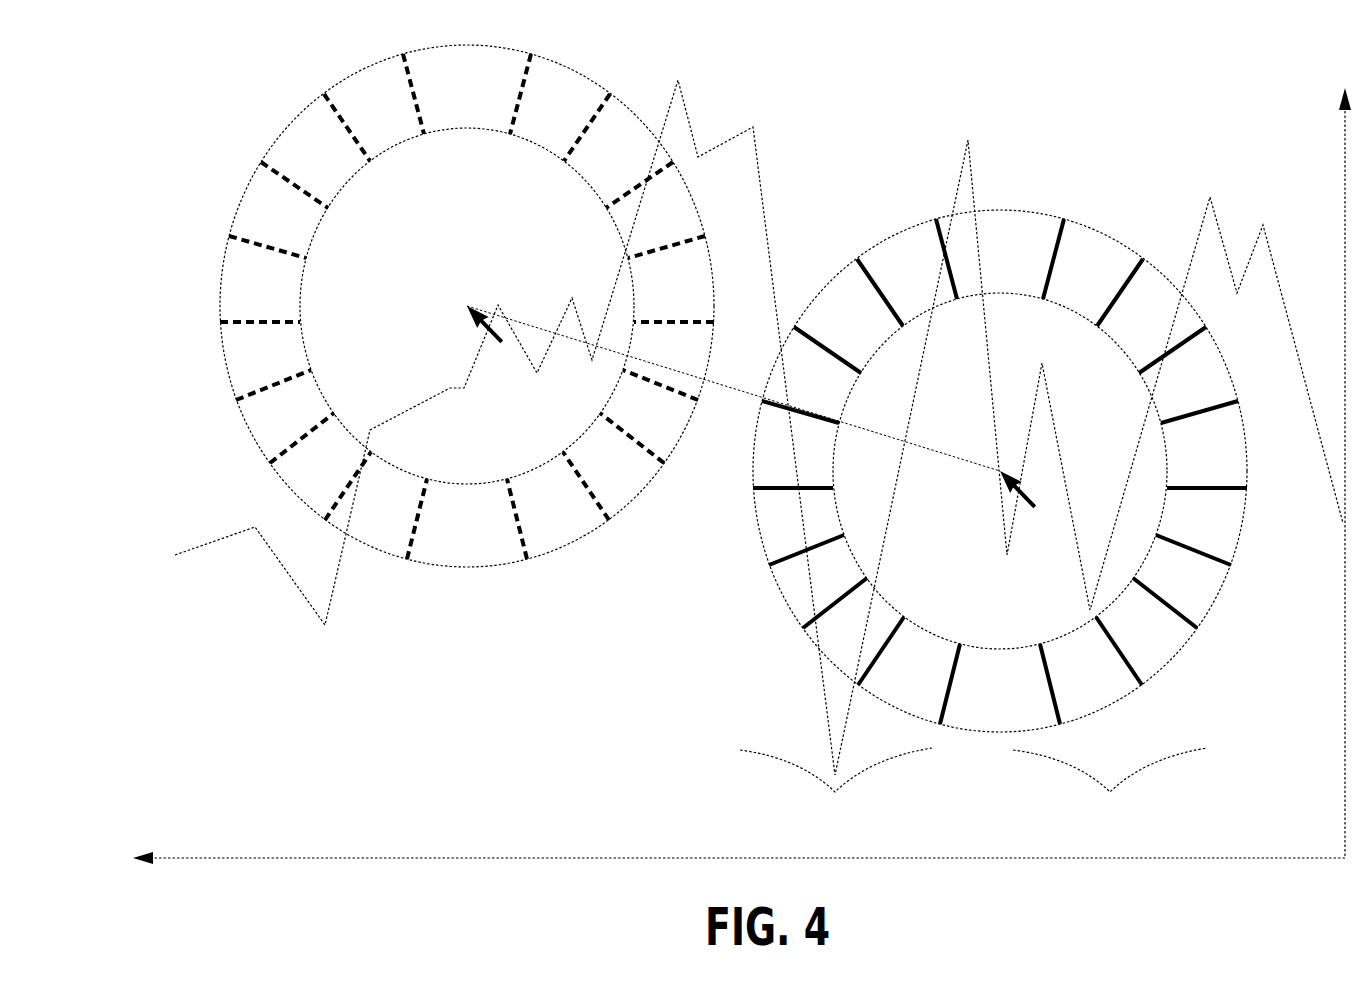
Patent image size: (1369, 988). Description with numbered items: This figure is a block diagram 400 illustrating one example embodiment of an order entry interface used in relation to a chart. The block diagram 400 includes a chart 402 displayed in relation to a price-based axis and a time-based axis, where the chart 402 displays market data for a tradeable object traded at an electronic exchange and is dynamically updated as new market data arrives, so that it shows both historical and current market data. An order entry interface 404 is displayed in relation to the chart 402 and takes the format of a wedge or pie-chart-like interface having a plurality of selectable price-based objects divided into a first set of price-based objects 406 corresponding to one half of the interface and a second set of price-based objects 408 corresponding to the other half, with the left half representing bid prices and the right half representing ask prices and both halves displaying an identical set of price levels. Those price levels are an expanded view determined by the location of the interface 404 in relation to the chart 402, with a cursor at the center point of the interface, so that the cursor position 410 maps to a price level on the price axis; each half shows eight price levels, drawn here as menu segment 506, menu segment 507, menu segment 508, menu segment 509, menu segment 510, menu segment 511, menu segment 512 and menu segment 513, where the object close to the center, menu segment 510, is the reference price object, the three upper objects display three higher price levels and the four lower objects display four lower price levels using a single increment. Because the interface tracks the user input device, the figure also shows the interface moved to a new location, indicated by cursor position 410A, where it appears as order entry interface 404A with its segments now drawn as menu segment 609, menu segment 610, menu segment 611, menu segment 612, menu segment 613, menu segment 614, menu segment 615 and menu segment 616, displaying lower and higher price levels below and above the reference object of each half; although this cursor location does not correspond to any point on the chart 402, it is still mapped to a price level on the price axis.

The block diagram 400 is at (1212, 105).
The chart 402 is at (976, 134).
The order entry interface 404 is at (1085, 186).
The order entry interface 404A is at (565, 50).
The first set of price-based objects 406 is at (1110, 788).
The second set of price-based objects 408 is at (836, 788).
The cursor position 410 is at (999, 488).
The cursor position 410A is at (707, 374).
The menu segment 506 is at (1000, 670).
The menu segment 507 is at (1000, 613).
The menu segment 508 is at (1000, 565).
The menu segment 509 is at (1000, 513).
The menu segment 510 is at (1000, 433).
The menu segment 511 is at (998, 364).
The menu segment 512 is at (996, 297).
The menu segment 513 is at (994, 259).
The menu segment 609 is at (467, 505).
The menu segment 610 is at (467, 447).
The menu segment 611 is at (467, 399).
The menu segment 612 is at (467, 348).
The menu segment 613 is at (467, 271).
The menu segment 614 is at (467, 199).
The menu segment 615 is at (463, 131).
The menu segment 616 is at (461, 94).